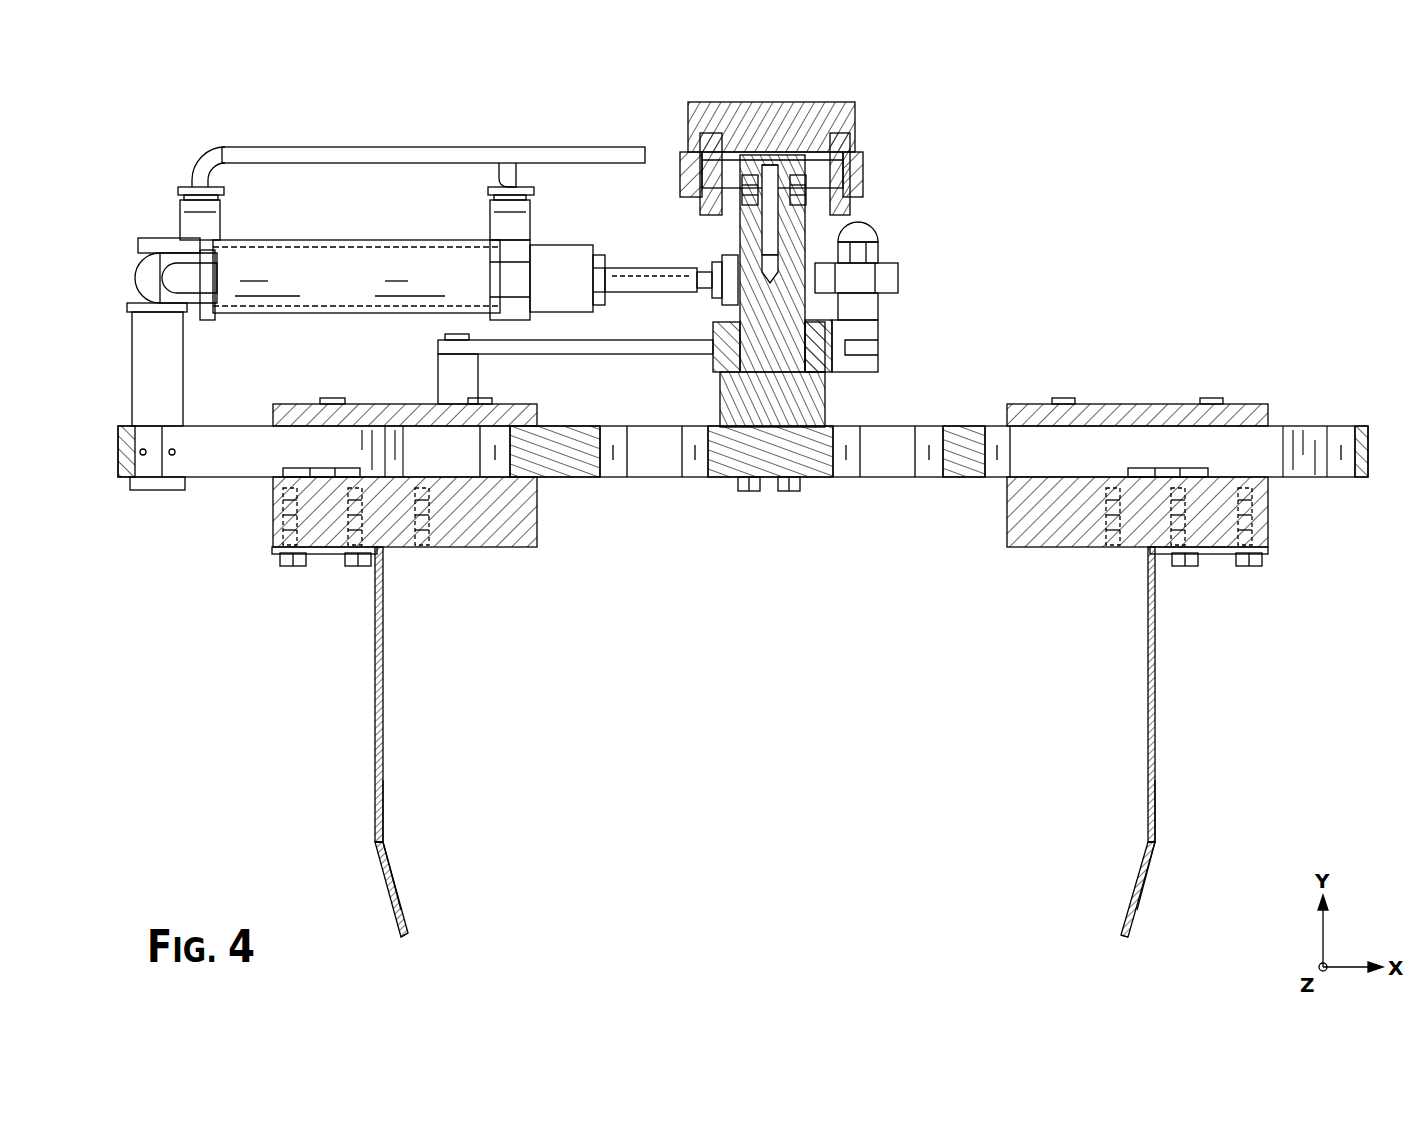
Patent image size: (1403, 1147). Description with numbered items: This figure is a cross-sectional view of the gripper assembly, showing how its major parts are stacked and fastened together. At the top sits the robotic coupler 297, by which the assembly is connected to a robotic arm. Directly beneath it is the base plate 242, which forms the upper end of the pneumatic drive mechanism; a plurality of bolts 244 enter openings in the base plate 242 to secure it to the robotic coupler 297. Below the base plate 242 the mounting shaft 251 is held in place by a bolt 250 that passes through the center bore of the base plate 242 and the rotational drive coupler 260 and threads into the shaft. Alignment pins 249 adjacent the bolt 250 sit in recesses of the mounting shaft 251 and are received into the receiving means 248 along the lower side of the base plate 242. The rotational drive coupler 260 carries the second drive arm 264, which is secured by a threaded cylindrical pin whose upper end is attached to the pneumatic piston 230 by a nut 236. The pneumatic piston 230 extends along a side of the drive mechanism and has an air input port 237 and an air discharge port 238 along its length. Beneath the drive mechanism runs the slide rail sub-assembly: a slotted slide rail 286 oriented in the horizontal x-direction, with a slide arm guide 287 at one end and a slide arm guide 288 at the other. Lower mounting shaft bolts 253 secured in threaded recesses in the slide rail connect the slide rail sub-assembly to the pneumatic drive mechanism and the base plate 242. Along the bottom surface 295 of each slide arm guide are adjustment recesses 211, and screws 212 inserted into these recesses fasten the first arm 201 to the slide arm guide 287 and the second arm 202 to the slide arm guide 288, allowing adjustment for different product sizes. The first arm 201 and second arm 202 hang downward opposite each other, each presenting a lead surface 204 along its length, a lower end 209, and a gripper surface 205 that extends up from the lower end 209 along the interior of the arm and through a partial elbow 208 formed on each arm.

The first arm 201 is at (1155, 722).
The second arm 202 is at (378, 742).
The lead surface 204 is at (378, 822).
The gripper surface 205 is at (400, 905).
The partial elbow 208 is at (380, 870).
The lower end 209 is at (405, 942).
The adjustment recesses 211 is at (288, 546).
The screws 212 is at (282, 567).
The pneumatic piston 230 is at (368, 294).
The nut 236 is at (880, 248).
The air input port 237 is at (185, 212).
The air discharge port 238 is at (490, 228).
The base plate 242 is at (865, 185).
The bolts 244 is at (705, 148).
The receiving means 248 is at (768, 162).
The alignment pins 249 is at (750, 205).
The bolt 250 is at (765, 232).
The mounting shaft 251 is at (826, 393).
The lower mounting shaft bolts 253 is at (789, 492).
The rotational drive coupler 260 is at (880, 320).
The second drive arm 264 is at (568, 355).
The slotted slide rail 286 is at (222, 425).
The slide arm guide 287 is at (1160, 403).
The slide arm guide 288 is at (272, 507).
The bottom surface 295 is at (1022, 548).
The robotic coupler 297 is at (858, 140).